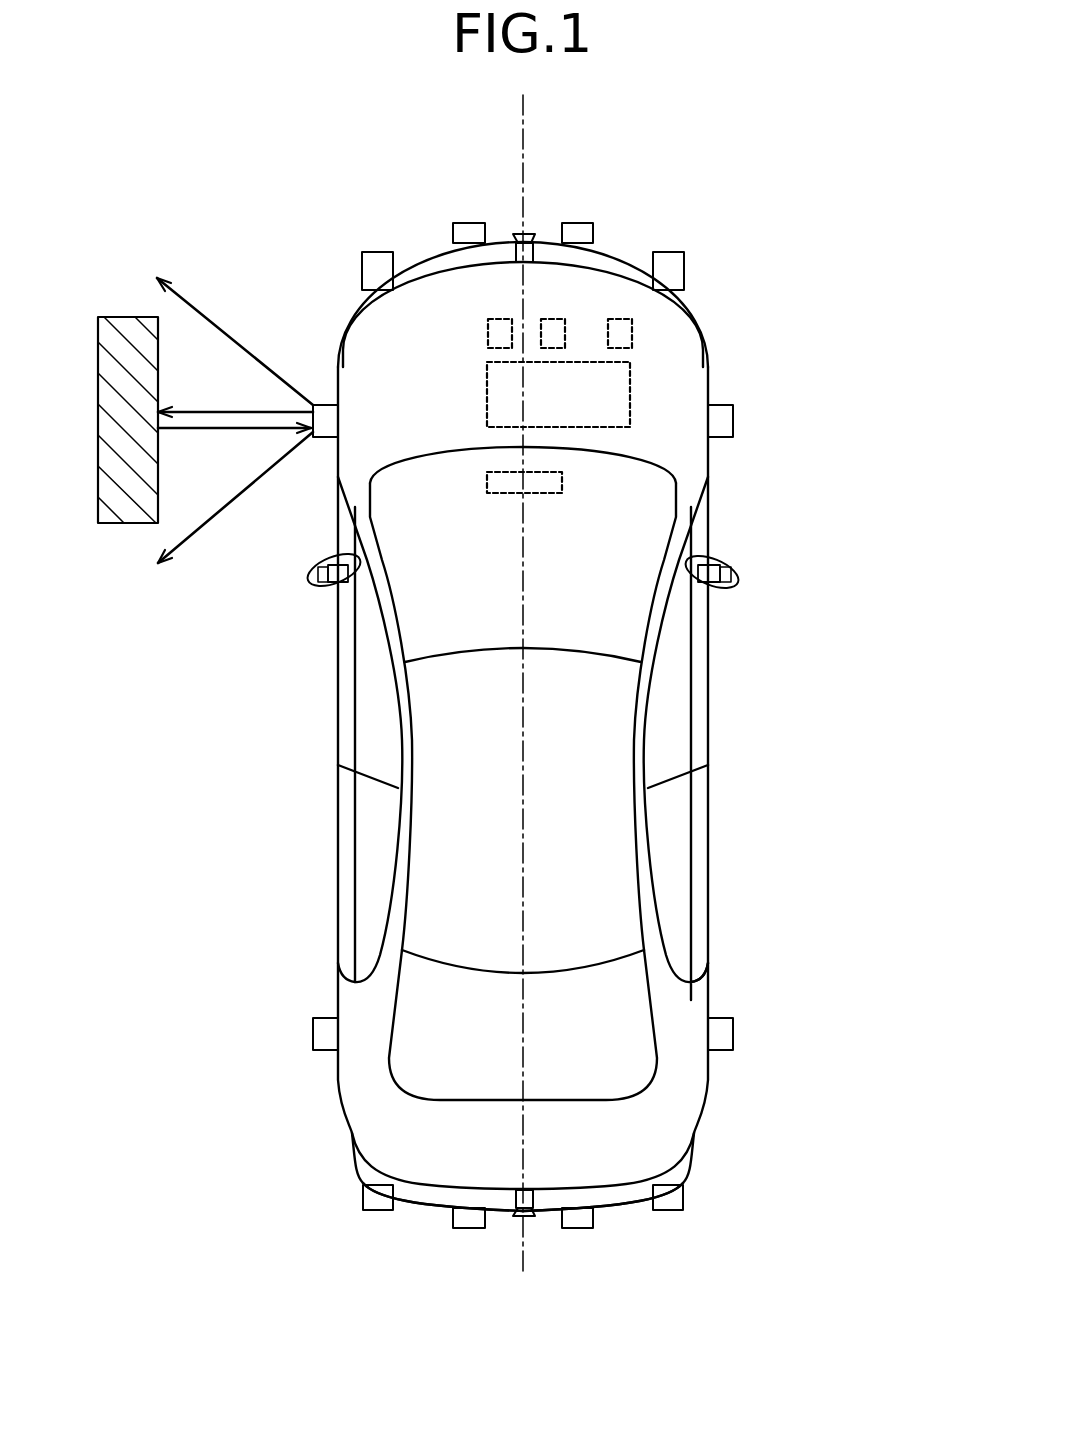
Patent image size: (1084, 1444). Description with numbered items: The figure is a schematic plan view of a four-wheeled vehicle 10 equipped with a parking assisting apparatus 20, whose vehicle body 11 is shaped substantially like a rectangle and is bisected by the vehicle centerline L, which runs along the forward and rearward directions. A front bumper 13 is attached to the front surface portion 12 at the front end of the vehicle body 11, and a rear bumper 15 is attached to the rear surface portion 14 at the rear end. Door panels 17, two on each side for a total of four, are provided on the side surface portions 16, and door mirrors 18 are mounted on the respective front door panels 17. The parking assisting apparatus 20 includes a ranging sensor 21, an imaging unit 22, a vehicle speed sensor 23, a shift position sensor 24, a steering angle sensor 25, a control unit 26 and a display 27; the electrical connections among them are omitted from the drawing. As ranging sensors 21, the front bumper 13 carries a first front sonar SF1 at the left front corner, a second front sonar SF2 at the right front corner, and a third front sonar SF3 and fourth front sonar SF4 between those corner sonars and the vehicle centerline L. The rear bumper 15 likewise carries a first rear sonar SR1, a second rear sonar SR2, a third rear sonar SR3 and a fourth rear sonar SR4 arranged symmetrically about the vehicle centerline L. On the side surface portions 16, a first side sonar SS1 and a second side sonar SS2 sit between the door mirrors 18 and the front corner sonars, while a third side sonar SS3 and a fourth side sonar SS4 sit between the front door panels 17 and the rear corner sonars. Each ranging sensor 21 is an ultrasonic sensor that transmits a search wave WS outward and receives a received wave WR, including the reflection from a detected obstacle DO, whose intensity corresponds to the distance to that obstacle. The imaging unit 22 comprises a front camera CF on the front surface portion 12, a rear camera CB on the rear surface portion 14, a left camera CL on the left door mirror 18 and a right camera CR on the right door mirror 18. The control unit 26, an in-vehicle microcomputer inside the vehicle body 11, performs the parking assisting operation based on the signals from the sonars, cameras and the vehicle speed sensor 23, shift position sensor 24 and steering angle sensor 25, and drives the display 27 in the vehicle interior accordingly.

The vehicle 10 is at (860, 163).
The vehicle body 11 is at (710, 357).
The front surface portion 12 is at (613, 270).
The front bumper 13 is at (633, 262).
The rear surface portion 14 is at (618, 1190).
The rear bumper 15 is at (687, 1167).
The side surface portion 16 is at (715, 1000).
The door panel 17 is at (348, 675).
The door mirror 18 is at (310, 578).
The parking assisting apparatus 20 is at (427, 343).
The ranging sensor 21 is at (735, 402).
The imaging unit 22 is at (520, 174).
The vehicle speed sensor 23 is at (632, 335).
The shift position sensor 24 is at (557, 318).
The steering angle sensor 25 is at (487, 323).
The control unit 26 is at (628, 420).
The display 27 is at (497, 482).
The first front sonar SF1 is at (374, 262).
The second front sonar SF2 is at (677, 267).
The third front sonar SF3 is at (466, 232).
The fourth front sonar SF4 is at (583, 232).
The first rear sonar SR1 is at (377, 1205).
The second rear sonar SR2 is at (673, 1205).
The third rear sonar SR3 is at (472, 1222).
The fourth rear sonar SR4 is at (580, 1222).
The first side sonar SS1 is at (327, 415).
The second side sonar SS2 is at (723, 422).
The third side sonar SS3 is at (322, 1035).
The fourth side sonar SS4 is at (725, 1033).
The front camera CF is at (528, 233).
The rear camera CB is at (520, 1213).
The left camera CL is at (330, 585).
The right camera CR is at (708, 570).
The search wave WS is at (212, 323).
The received wave WR is at (223, 433).
The detected obstacle DO is at (128, 328).
The vehicle centerline L is at (523, 855).